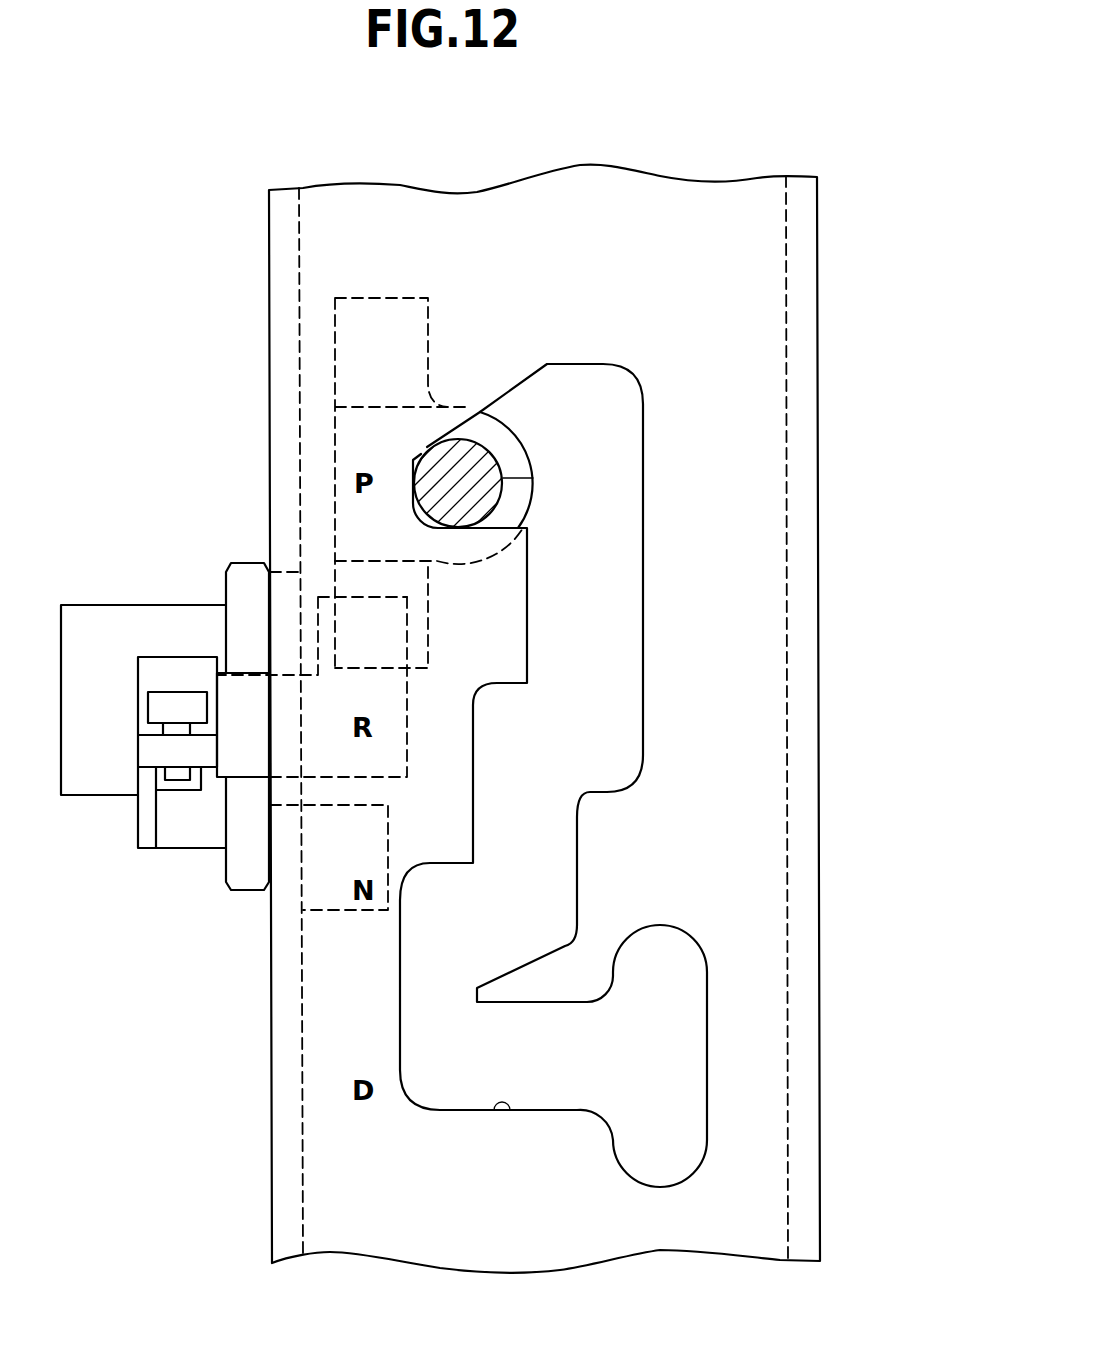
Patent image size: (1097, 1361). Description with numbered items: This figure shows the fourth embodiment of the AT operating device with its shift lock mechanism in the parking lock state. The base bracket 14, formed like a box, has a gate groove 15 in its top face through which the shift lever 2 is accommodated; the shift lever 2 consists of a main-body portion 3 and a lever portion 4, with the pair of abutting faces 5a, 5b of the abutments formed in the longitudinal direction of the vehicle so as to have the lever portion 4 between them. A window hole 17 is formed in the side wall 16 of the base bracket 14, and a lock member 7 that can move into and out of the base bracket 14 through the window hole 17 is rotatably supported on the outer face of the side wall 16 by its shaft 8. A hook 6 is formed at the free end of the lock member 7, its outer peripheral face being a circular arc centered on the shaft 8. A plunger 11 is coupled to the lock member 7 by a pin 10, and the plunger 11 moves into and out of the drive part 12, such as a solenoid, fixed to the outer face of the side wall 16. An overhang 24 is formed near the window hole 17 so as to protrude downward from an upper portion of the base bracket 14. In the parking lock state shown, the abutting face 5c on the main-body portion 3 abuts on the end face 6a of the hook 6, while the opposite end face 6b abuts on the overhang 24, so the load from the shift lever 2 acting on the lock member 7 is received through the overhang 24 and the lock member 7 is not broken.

The shift lever 2 is at (524, 424).
The main-body portion 3 is at (535, 502).
The lever portion 4 is at (503, 478).
The abutting face 5a is at (420, 632).
The abutting face 5b is at (415, 343).
The abutting face 5c is at (353, 563).
The hook 6 is at (408, 720).
The end face 6a is at (387, 596).
The end face 6b is at (375, 777).
The lock member 7 is at (142, 752).
The shaft 8 is at (243, 561).
The pin 10 is at (175, 780).
The plunger 11 is at (172, 703).
The drive part 12 is at (103, 603).
The base bracket 14 is at (660, 205).
The gate groove 15 is at (496, 1110).
The side wall 16 is at (285, 358).
The window hole 17 is at (283, 793).
The overhang 24 is at (375, 848).